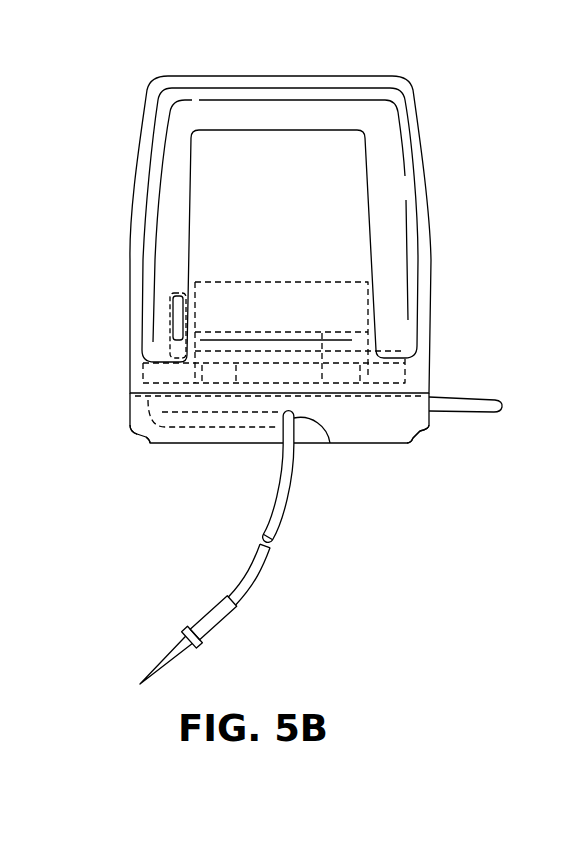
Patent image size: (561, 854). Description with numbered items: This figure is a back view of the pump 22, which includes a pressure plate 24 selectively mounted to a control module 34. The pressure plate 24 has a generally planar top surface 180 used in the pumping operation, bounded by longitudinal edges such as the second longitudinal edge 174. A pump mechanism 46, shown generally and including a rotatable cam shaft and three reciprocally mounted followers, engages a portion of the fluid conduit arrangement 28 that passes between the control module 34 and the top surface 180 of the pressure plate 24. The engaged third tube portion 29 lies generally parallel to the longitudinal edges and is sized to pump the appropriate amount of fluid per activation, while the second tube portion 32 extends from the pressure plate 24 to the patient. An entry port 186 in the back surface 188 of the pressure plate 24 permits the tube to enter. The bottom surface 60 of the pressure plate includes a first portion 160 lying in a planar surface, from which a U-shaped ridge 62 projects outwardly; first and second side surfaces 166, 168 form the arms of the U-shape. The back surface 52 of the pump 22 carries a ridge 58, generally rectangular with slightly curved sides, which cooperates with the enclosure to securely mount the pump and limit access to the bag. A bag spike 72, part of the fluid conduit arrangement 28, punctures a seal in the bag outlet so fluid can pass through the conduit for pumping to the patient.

The pump 22 is at (427, 131).
The pressure plate 24 is at (422, 428).
The fluid conduit arrangement 28 is at (294, 507).
The third tube portion 29 is at (150, 382).
The second tube portion 32 is at (495, 397).
The control module 34 is at (433, 290).
The pump mechanism 46 is at (300, 332).
The back surface 52 is at (303, 190).
The ridge 58 is at (198, 89).
The bottom surface 60 is at (140, 442).
The U-shaped ridge 62 is at (408, 432).
The bag spike 72 is at (200, 617).
The first portion 160 is at (410, 427).
The first side surface 166 is at (148, 450).
The second side surface 168 is at (413, 433).
The second longitudinal edge 174 is at (130, 402).
The top surface 180 is at (400, 387).
The entry port 186 is at (333, 447).
The back surface 188 is at (227, 437).